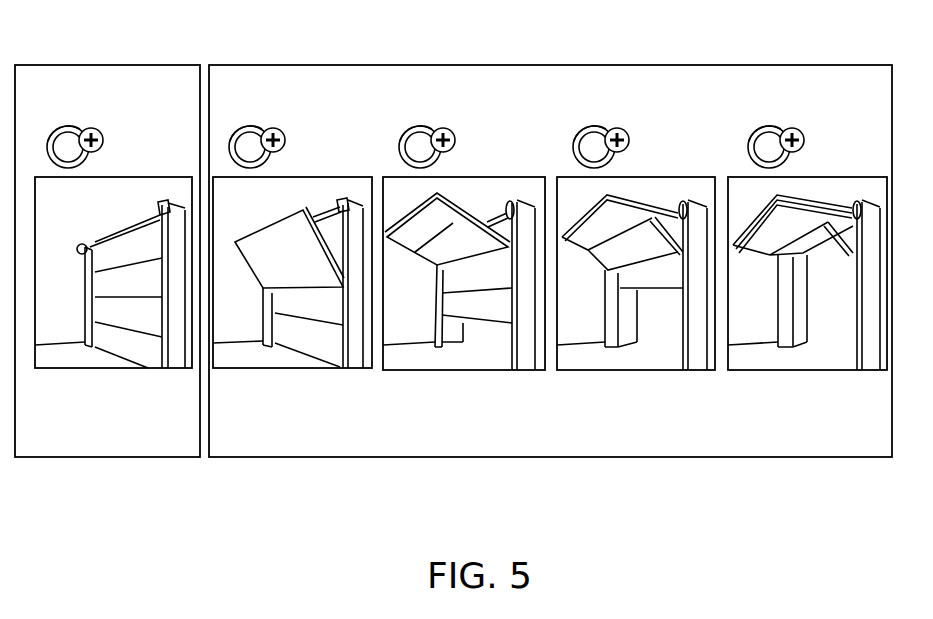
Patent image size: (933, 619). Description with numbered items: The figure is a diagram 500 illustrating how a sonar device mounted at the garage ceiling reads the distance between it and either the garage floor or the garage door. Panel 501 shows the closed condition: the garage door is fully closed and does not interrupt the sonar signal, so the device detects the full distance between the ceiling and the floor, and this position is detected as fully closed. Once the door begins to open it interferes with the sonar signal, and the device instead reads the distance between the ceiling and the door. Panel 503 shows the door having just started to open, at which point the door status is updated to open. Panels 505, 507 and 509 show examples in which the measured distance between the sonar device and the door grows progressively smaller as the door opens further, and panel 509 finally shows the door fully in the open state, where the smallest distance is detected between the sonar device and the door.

The diagram 500 is at (660, 506).
The panel 501 is at (120, 188).
The panel 503 is at (302, 188).
The panel 505 is at (484, 188).
The panel 507 is at (660, 188).
The panel 509 is at (820, 188).